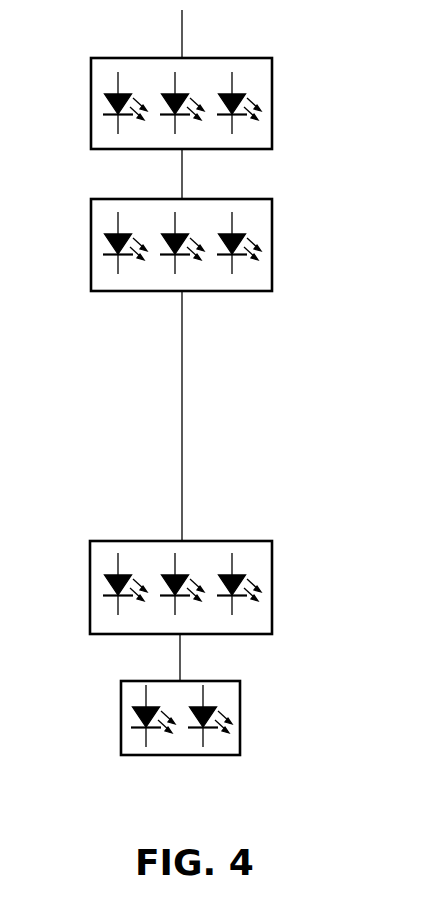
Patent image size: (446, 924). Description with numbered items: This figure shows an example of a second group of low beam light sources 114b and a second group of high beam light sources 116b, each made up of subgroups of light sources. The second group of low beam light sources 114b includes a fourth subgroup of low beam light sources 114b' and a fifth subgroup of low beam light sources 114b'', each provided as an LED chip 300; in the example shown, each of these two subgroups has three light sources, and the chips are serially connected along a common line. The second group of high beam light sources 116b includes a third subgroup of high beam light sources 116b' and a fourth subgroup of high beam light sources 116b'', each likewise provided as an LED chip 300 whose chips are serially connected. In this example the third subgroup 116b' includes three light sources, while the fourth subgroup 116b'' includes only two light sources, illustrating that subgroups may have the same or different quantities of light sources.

The second group of low beam light sources 114b is at (204, 169).
The fourth subgroup of low beam light sources 114b' is at (154, 95).
The fifth subgroup of low beam light sources 114b'' is at (154, 237).
The second group of high beam light sources 116b is at (204, 644).
The third subgroup of high beam light sources 116b' is at (154, 587).
The fourth subgroup of high beam light sources 116b'' is at (152, 718).
The LED chip 300 is at (91, 135).